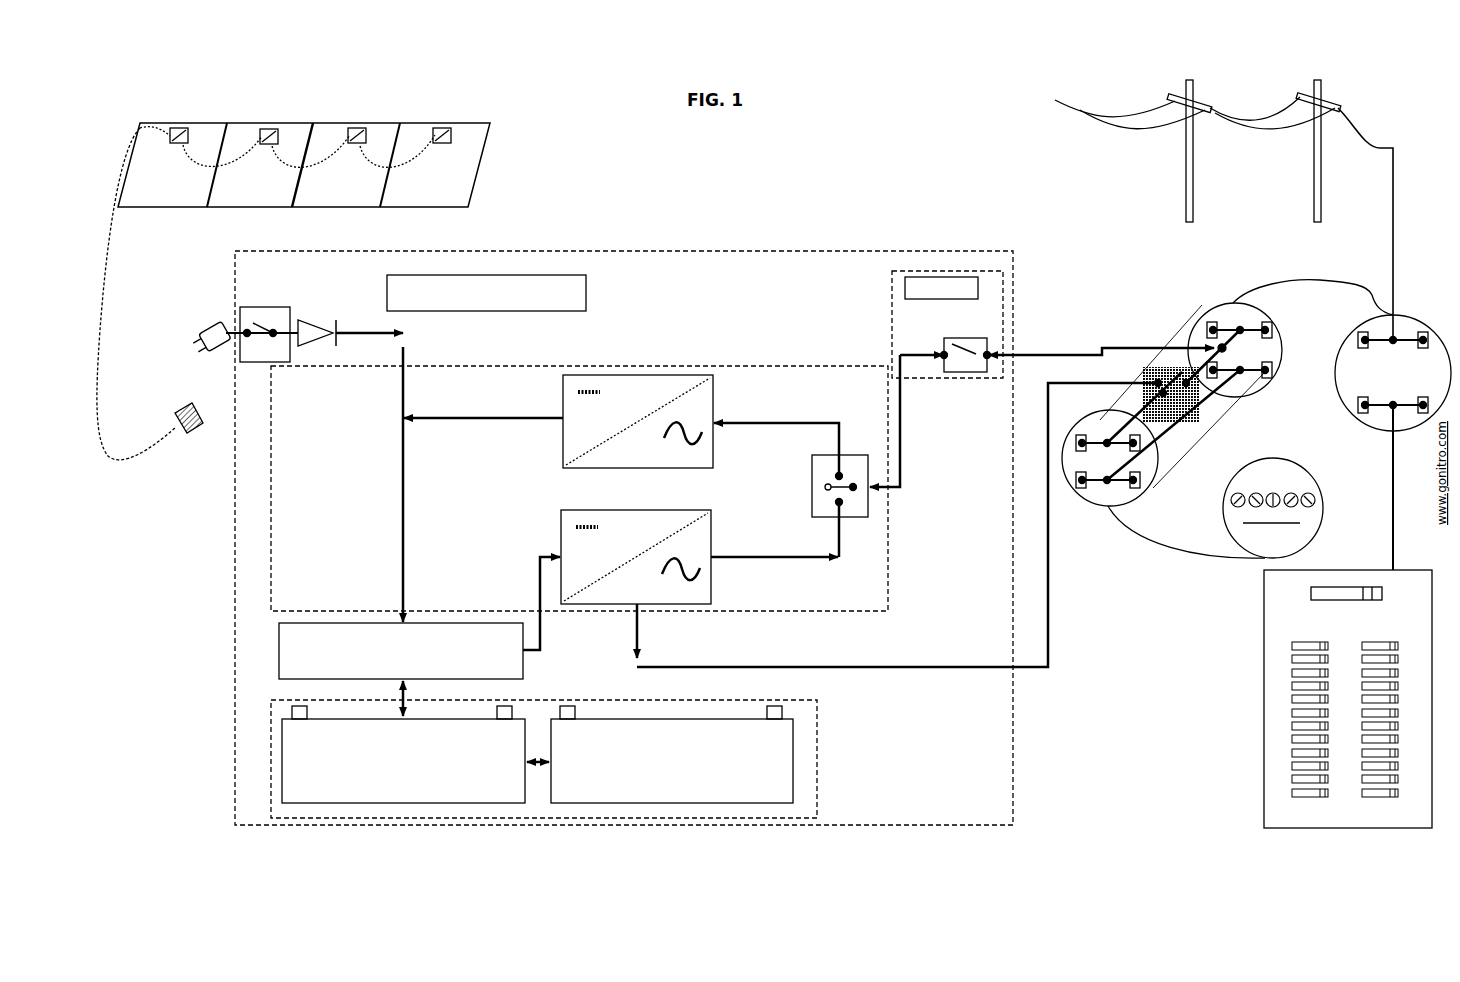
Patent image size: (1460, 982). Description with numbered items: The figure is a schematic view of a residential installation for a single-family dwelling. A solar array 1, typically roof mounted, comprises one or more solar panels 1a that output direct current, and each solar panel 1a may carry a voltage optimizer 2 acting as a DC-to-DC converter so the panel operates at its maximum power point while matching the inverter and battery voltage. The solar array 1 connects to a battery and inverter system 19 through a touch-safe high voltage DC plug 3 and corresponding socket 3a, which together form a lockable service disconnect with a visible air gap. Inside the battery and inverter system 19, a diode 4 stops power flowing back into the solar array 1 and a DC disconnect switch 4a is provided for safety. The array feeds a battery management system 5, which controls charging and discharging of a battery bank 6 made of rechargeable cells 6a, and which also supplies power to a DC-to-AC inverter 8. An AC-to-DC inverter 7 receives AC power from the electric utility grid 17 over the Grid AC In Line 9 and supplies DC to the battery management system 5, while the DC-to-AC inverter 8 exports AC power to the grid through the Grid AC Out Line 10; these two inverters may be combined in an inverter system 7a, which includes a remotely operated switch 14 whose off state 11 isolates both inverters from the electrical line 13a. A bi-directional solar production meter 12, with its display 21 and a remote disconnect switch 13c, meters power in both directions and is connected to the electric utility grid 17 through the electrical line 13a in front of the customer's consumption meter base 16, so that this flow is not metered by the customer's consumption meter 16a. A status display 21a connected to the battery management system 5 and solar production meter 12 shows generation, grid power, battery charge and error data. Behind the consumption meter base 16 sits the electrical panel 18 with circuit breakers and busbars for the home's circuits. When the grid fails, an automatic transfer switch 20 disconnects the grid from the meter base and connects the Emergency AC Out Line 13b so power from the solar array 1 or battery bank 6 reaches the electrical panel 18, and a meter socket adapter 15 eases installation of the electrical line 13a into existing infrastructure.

The solar array 1 is at (140, 142).
The solar panel 1a is at (455, 183).
The voltage optimizer 2 is at (435, 128).
The DC plug 3 is at (183, 405).
The socket 3a is at (222, 356).
The diode 4 is at (300, 314).
The DC disconnect switch 4a is at (254, 323).
The battery management system 5 is at (401, 651).
The battery bank 6 is at (600, 698).
The rechargeable cell 6a is at (537, 754).
The AC-to-DC inverter 7 is at (620, 375).
The inverter system 7a is at (668, 357).
The DC-to-AC inverter 8 is at (577, 510).
The Grid AC In Line 9 is at (827, 419).
The Grid AC Out Line 10 is at (765, 556).
The off state 11 is at (803, 502).
The solar production meter 12 is at (880, 322).
The electrical line 13a is at (1113, 338).
The Emergency AC Out Line 13b is at (870, 662).
The remote disconnect switch 13c is at (975, 345).
The switch 14 is at (876, 513).
The meter socket adapter 15 is at (1105, 505).
The customer's consumption meter base 16 is at (1355, 318).
The customer's consumption meter 16a is at (1222, 523).
The electric utility grid 17 is at (1224, 210).
The electrical panel 18 is at (1260, 790).
The battery and inverter system 19 is at (227, 310).
The automatic transfer switch 20 is at (1203, 418).
The display 21 is at (941, 288).
The status display 21a is at (486, 293).